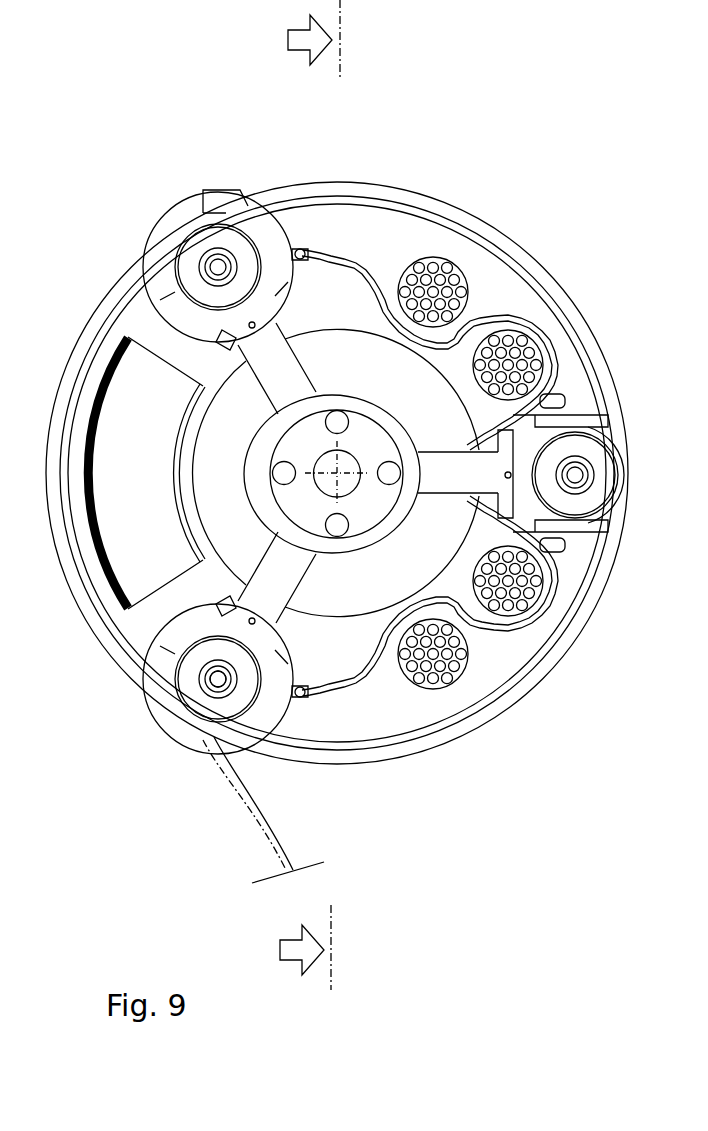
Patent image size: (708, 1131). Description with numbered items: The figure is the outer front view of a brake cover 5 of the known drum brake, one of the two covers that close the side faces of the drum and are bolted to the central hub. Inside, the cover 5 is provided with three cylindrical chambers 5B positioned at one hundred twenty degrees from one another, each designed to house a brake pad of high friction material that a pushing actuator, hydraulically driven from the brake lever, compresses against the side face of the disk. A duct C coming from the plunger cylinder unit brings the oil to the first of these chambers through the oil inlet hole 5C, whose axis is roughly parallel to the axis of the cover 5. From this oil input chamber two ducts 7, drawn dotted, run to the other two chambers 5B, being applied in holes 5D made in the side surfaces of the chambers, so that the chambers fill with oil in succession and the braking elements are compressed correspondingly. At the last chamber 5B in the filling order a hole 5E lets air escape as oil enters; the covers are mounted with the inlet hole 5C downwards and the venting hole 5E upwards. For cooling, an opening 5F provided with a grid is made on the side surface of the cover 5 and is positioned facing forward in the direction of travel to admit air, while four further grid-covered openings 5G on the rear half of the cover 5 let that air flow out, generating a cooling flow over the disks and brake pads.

The cover 5 is at (707, 530).
The cylindrical chamber 5B is at (646, 370).
The oil inlet hole 5C is at (207, 684).
The hole 5D is at (300, 250).
The air outflow hole 5E is at (218, 191).
The grid opening 5F is at (90, 498).
The grid openings 5G is at (443, 282).
The duct 7 is at (370, 270).
The duct C is at (226, 816).